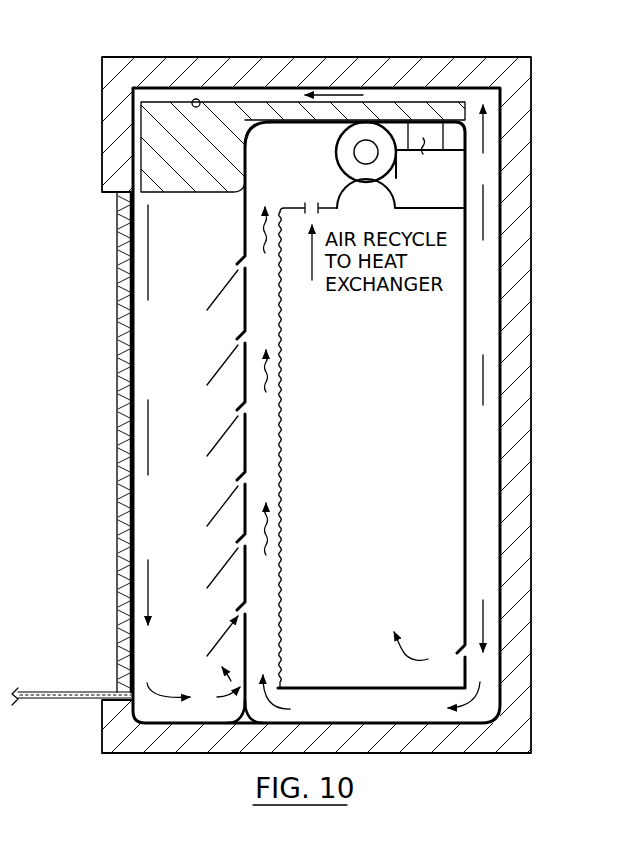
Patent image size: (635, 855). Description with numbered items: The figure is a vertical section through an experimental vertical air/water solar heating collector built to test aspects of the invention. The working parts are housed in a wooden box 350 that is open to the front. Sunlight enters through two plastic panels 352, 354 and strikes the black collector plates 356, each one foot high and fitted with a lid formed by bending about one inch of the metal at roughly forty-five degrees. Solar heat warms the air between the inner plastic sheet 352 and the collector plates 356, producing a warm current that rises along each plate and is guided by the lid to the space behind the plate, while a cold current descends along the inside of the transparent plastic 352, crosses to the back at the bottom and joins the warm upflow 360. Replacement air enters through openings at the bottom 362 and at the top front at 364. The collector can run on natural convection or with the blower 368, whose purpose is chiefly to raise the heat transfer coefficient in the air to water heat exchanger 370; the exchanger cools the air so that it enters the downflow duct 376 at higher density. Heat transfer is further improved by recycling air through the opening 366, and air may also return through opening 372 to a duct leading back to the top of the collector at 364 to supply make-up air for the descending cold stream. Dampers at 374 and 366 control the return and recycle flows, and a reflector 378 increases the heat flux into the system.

The wooden box 350 is at (537, 268).
The inner plastic panel 352 is at (133, 365).
The outer plastic panel 354 is at (118, 352).
The black collector plates 356 is at (243, 388).
The warm upflow 360 is at (281, 532).
The bottom openings 362 is at (218, 697).
The top front opening 364 is at (140, 193).
The recycle opening with damper 366 is at (455, 651).
The blower 368 is at (350, 152).
The air to water heat exchanger 370 is at (427, 157).
The return opening 372 is at (481, 137).
The damper 374 is at (196, 99).
The downflow duct 376 is at (503, 168).
The reflector 378 is at (60, 690).